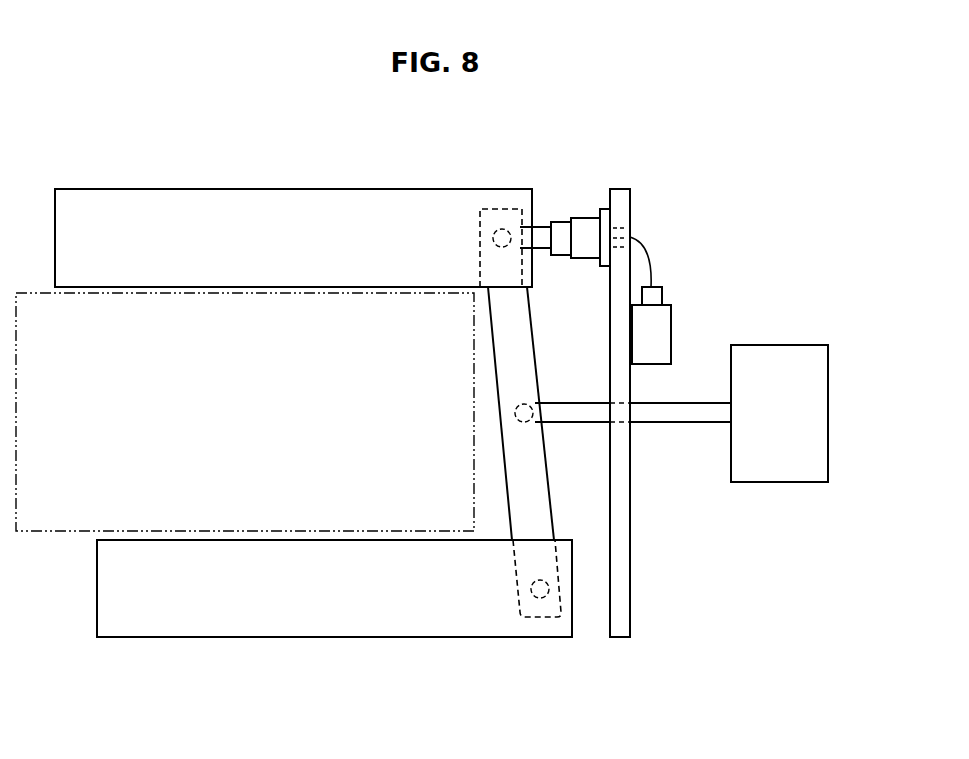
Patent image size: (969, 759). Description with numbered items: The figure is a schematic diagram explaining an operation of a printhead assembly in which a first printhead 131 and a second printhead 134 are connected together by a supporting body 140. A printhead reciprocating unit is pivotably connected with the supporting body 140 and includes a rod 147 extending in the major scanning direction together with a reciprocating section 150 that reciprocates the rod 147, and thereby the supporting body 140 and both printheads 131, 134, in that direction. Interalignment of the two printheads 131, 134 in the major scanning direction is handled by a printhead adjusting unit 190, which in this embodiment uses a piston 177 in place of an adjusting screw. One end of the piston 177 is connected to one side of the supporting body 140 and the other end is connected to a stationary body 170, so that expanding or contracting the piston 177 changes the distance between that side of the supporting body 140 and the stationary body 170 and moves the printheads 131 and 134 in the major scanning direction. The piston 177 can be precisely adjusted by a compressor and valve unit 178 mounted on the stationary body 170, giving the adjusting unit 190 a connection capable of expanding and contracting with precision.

The first printhead 131 is at (293, 190).
The second printhead 134 is at (335, 637).
The supporting body 140 is at (468, 208).
The rod 147 is at (680, 423).
The reciprocating section 150 is at (780, 344).
The stationary body 170 is at (618, 189).
The piston 177 is at (591, 231).
The compressor and valve unit 178 is at (658, 321).
The printhead adjusting unit 190 is at (505, 157).